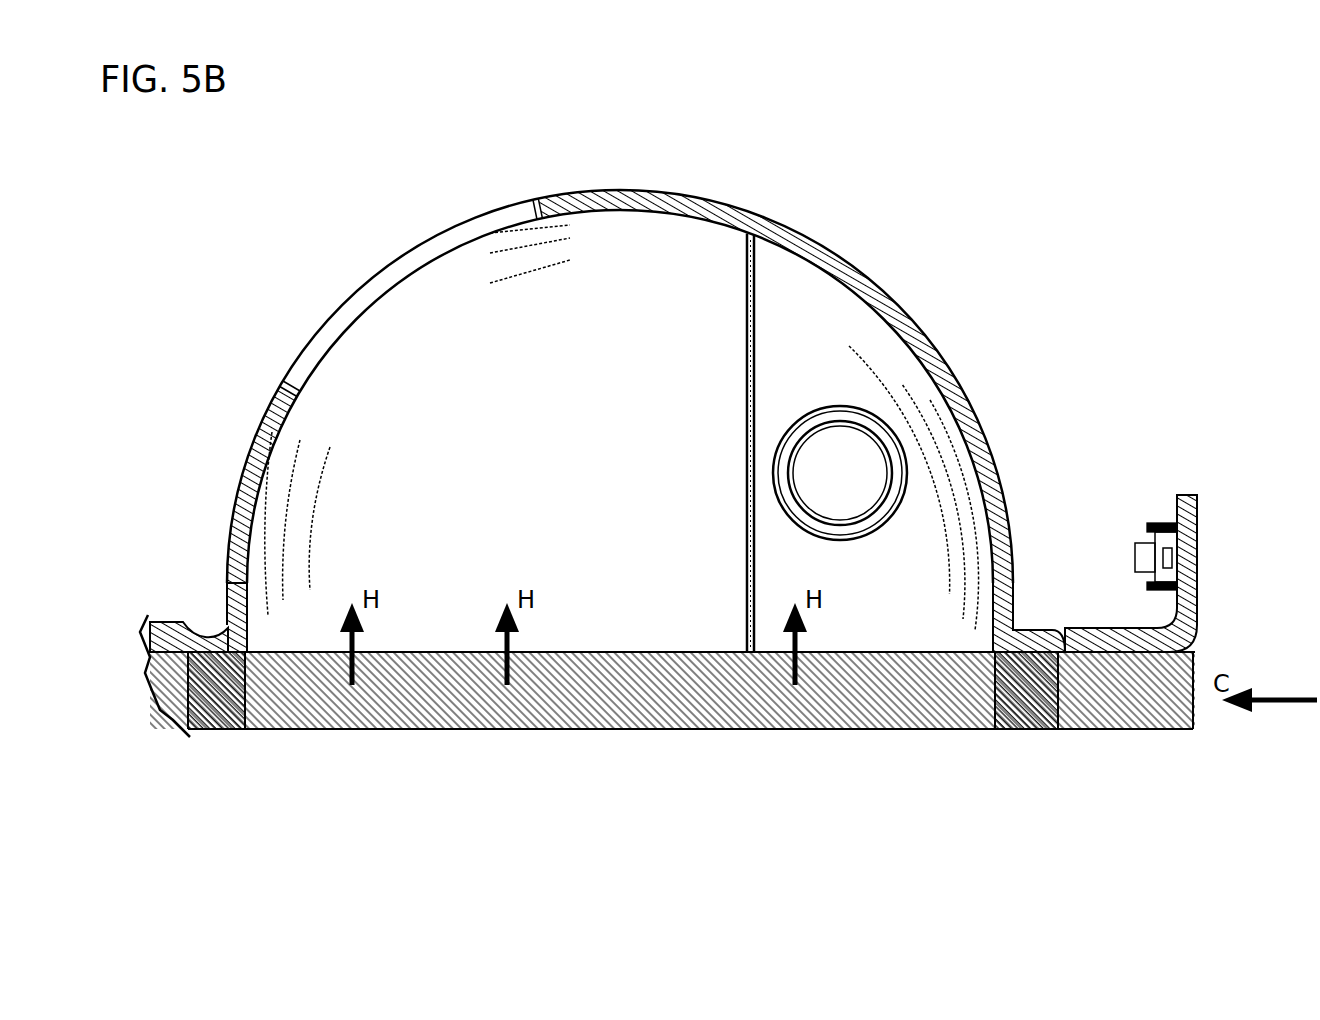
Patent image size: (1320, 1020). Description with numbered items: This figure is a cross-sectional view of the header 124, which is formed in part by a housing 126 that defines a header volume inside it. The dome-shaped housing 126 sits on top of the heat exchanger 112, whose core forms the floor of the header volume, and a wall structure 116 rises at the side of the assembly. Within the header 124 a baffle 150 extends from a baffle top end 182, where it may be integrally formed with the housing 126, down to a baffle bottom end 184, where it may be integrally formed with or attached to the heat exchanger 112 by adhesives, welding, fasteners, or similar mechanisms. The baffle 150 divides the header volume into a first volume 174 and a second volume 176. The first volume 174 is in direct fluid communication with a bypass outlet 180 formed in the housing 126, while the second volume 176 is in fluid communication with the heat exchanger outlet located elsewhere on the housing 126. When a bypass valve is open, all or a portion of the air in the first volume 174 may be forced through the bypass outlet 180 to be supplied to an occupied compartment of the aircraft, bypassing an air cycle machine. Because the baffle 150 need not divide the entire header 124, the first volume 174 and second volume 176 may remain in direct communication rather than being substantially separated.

The heat exchanger 112 is at (585, 705).
The side wall bracket 116 is at (1195, 583).
The header 124 is at (646, 369).
The housing 126 is at (395, 277).
The baffle 150 is at (745, 430).
The first volume 174 is at (908, 549).
The second volume 176 is at (410, 404).
The bypass outlet 180 is at (875, 430).
The baffle top end 182 is at (736, 239).
The baffle bottom end 184 is at (739, 637).